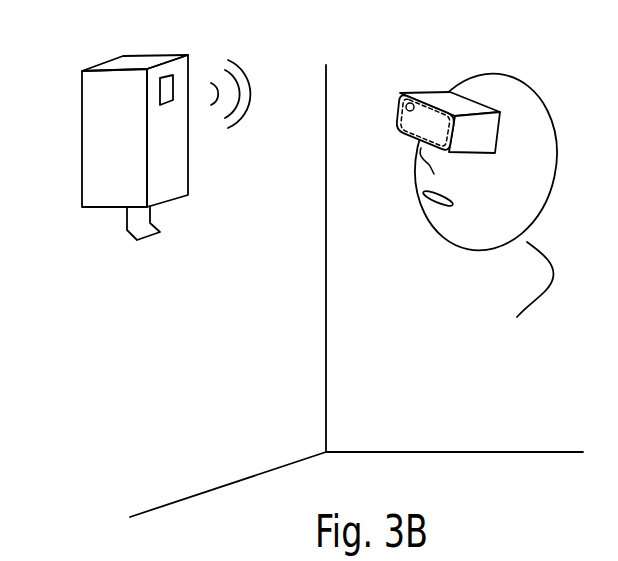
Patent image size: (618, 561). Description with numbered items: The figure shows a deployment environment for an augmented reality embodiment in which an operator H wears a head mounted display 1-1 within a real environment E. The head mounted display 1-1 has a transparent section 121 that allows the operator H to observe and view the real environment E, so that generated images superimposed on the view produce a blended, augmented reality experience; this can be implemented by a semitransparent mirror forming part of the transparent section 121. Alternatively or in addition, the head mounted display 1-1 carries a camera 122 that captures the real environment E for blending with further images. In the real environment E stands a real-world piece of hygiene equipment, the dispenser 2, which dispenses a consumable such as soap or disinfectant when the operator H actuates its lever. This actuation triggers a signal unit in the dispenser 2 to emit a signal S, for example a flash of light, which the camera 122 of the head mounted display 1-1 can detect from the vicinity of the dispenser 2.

The head mounted display 1-1 is at (422, 106).
The transparent section 121 is at (398, 129).
The camera 122 is at (400, 100).
The dispenser 2 is at (177, 200).
The signal S is at (235, 88).
The operator H is at (530, 83).
The real environment E is at (356, 291).